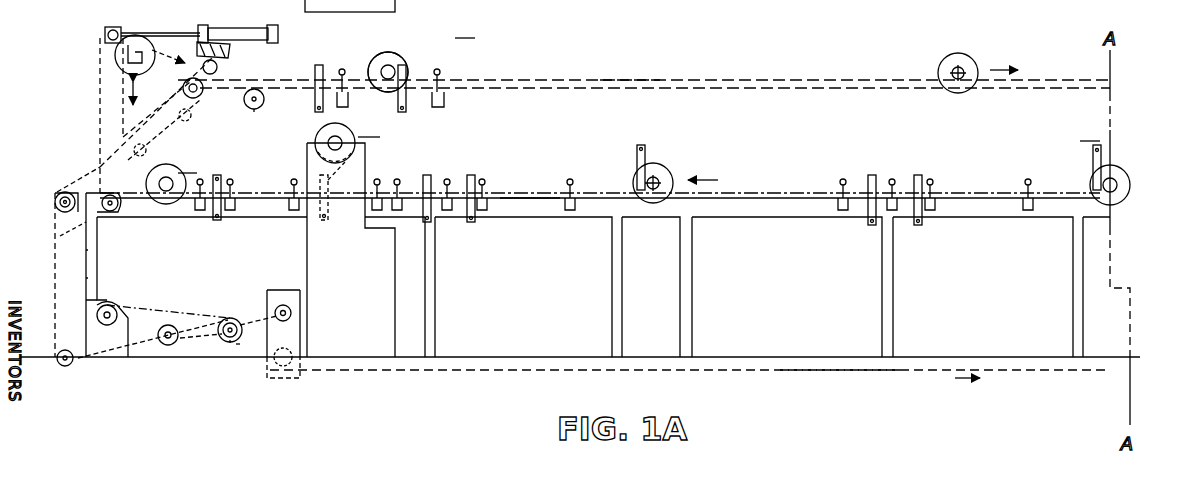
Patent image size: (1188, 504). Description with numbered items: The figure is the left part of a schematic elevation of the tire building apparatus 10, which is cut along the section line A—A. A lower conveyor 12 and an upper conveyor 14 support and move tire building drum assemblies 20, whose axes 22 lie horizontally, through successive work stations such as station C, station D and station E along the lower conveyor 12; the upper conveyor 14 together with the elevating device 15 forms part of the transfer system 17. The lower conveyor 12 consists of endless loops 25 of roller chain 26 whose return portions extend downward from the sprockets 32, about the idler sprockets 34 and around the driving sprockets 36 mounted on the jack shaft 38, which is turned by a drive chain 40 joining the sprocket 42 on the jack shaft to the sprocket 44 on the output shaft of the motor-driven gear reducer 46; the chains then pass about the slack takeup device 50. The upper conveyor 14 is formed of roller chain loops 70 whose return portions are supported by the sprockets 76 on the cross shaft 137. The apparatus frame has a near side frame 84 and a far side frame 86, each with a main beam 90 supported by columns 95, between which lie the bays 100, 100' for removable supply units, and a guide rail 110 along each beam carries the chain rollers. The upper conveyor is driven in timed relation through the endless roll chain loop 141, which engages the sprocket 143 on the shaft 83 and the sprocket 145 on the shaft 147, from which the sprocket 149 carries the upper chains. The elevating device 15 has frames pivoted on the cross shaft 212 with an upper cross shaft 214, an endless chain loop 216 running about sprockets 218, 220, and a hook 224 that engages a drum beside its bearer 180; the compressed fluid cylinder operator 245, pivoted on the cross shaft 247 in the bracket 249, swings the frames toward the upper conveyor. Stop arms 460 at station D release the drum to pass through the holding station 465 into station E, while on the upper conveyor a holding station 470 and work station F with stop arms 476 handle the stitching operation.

The tire building apparatus 10 is at (577, 78).
The lower conveyor 12 is at (770, 192).
The upper conveyor 14 is at (810, 78).
The elevating device 15 is at (98, 83).
The transfer system 17 is at (690, 78).
The tire building drum assembly 20 is at (172, 200).
The axis of drum assembly 22 is at (958, 73).
The endless loop 25 is at (820, 370).
The roller chain 26 is at (815, 192).
The sprocket 32 is at (55, 200).
The idler sprocket 34 is at (66, 366).
The driving sprocket 36 is at (230, 342).
The jack shaft 38 is at (238, 346).
The drive chain 40 is at (178, 312).
The sprocket 42 is at (230, 318).
The sprocket 44 is at (165, 326).
The gear reducer 46 is at (109, 300).
The slack takeup device 50 is at (280, 295).
The roller chain loop 70 is at (632, 78).
The sprocket 76 is at (255, 109).
The shaft 83 is at (60, 188).
The near side frame 84 is at (88, 252).
The far side frame 86 is at (88, 280).
The main beam 90 is at (140, 212).
The column 95 is at (683, 342).
The bay 100 is at (927, 317).
The bay 100' is at (754, 317).
The guide rail 110 is at (525, 192).
The cross shaft 137 is at (257, 96).
The endless roll chain loop 141 is at (93, 168).
The sprocket 143 is at (55, 196).
The sprocket 145 is at (205, 95).
The shaft 147 is at (196, 100).
The sprocket 149 is at (183, 88).
The bearer 180 is at (383, 62).
The cross shaft 212 is at (105, 207).
The cross shaft 214 is at (113, 28).
The endless chain loop 216 is at (100, 105).
The sprocket 218 is at (105, 38).
The sprocket 220 is at (60, 236).
The hook 224 is at (133, 45).
The compressed fluid cylinder operator 245 is at (243, 28).
The cross shaft 247 is at (213, 42).
The bracket 249 is at (228, 52).
The stop arm 460 is at (367, 156).
The holding station 465 is at (225, 183).
The holding station 470 is at (320, 64).
The stop arm 476 is at (405, 75).
The work station C is at (1090, 156).
The work station D is at (246, 237).
The work station E is at (187, 164).
The work station F is at (465, 28).